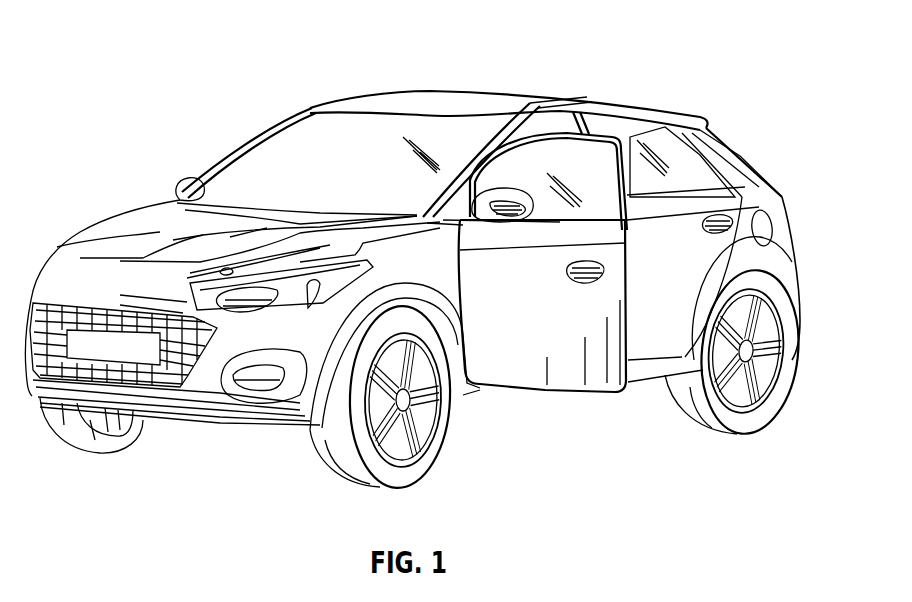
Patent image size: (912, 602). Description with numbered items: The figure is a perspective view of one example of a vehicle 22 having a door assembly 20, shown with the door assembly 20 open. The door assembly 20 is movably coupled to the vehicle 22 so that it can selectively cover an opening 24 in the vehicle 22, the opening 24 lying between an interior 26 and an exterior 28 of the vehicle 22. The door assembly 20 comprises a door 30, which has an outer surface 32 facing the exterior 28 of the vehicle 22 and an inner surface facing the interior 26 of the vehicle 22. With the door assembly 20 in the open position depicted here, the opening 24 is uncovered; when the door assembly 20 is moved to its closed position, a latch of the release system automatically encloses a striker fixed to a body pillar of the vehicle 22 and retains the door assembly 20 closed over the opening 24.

The door assembly 20 is at (597, 420).
The vehicle 22 is at (122, 39).
The opening 24 is at (580, 120).
The interior 26 is at (537, 127).
The exterior 28 is at (836, 369).
The door 30 is at (508, 374).
The outer surface 32 is at (617, 300).